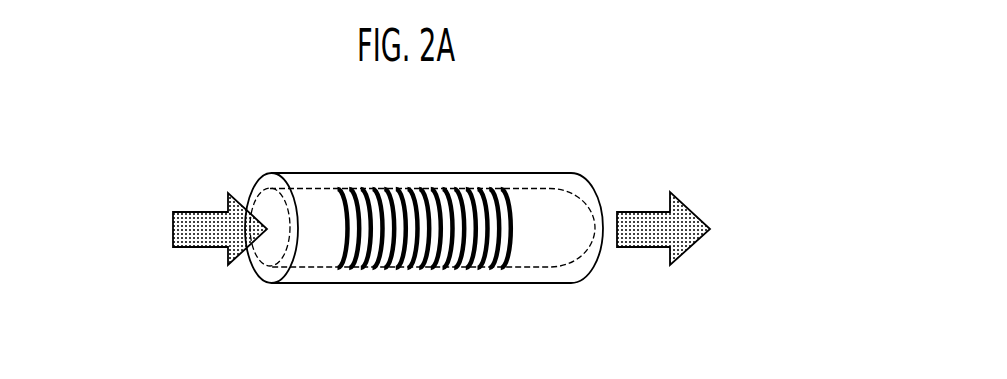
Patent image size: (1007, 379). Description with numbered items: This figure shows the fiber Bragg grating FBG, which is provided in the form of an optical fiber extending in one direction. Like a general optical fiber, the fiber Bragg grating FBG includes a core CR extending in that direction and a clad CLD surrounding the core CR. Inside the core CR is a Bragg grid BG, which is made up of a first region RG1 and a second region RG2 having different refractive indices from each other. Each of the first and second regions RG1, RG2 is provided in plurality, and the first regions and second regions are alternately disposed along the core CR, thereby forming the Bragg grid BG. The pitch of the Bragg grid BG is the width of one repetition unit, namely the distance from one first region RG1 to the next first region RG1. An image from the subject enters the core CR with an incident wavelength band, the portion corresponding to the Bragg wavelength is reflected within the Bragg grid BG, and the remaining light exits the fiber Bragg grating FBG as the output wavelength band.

The fiber Bragg grating FBG is at (420, 201).
The clad CLD is at (267, 273).
The core CR is at (266, 249).
The Bragg grid BG is at (418, 236).
The first region RG1 is at (450, 252).
The second region RG2 is at (472, 252).